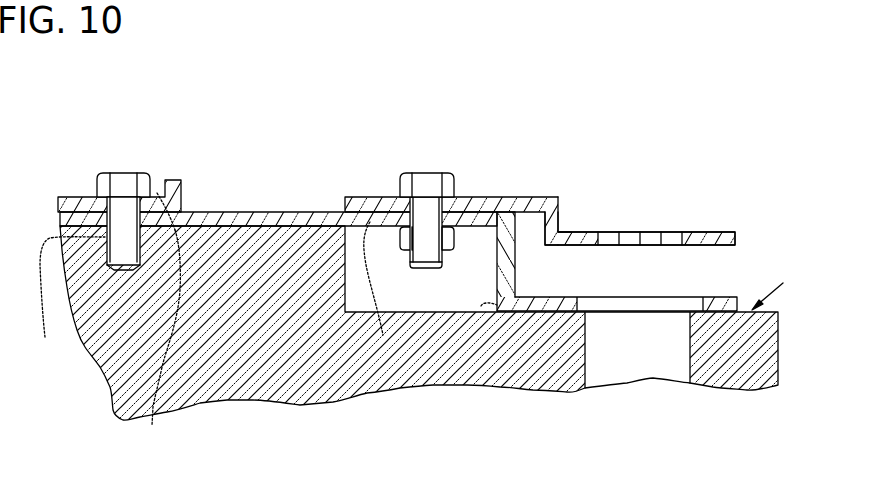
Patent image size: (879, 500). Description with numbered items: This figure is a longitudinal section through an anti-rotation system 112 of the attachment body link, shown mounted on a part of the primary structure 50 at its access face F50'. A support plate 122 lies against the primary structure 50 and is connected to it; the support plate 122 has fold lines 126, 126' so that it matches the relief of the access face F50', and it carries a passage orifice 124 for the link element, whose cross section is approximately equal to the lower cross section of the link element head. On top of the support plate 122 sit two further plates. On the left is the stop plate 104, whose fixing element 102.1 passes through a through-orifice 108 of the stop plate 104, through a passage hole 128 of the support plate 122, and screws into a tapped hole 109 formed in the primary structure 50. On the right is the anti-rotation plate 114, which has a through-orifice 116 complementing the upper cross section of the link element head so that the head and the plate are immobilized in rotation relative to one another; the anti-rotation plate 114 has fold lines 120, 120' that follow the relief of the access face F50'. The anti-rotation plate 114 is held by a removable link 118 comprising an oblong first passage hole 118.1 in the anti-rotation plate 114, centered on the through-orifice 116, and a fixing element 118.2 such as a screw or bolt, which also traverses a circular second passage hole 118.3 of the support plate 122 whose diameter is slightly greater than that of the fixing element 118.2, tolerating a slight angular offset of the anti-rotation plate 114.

The primary structure 50 is at (190, 366).
The stop plate 104 is at (66, 197).
The fixing element 102.1 is at (115, 165).
The through-orifice 108 is at (157, 193).
The tapped hole 109 is at (69, 301).
The support plate 122 is at (234, 204).
The anti-rotation system 112 is at (725, 188).
The anti-rotation plate 114 is at (512, 188).
The through-orifice 116 is at (650, 231).
The removable link 118 is at (422, 163).
The first passage hole 118.1 is at (410, 227).
The fixing element 118.2 is at (447, 177).
The second passage hole 118.3 is at (383, 335).
The fold line 120 is at (645, 180).
The fold line 120' is at (587, 185).
The passage orifice 124 is at (663, 302).
The fold line 126 is at (485, 332).
The fold line 126' is at (505, 383).
The passage hole 128 is at (160, 341).
The access face F50' is at (797, 296).